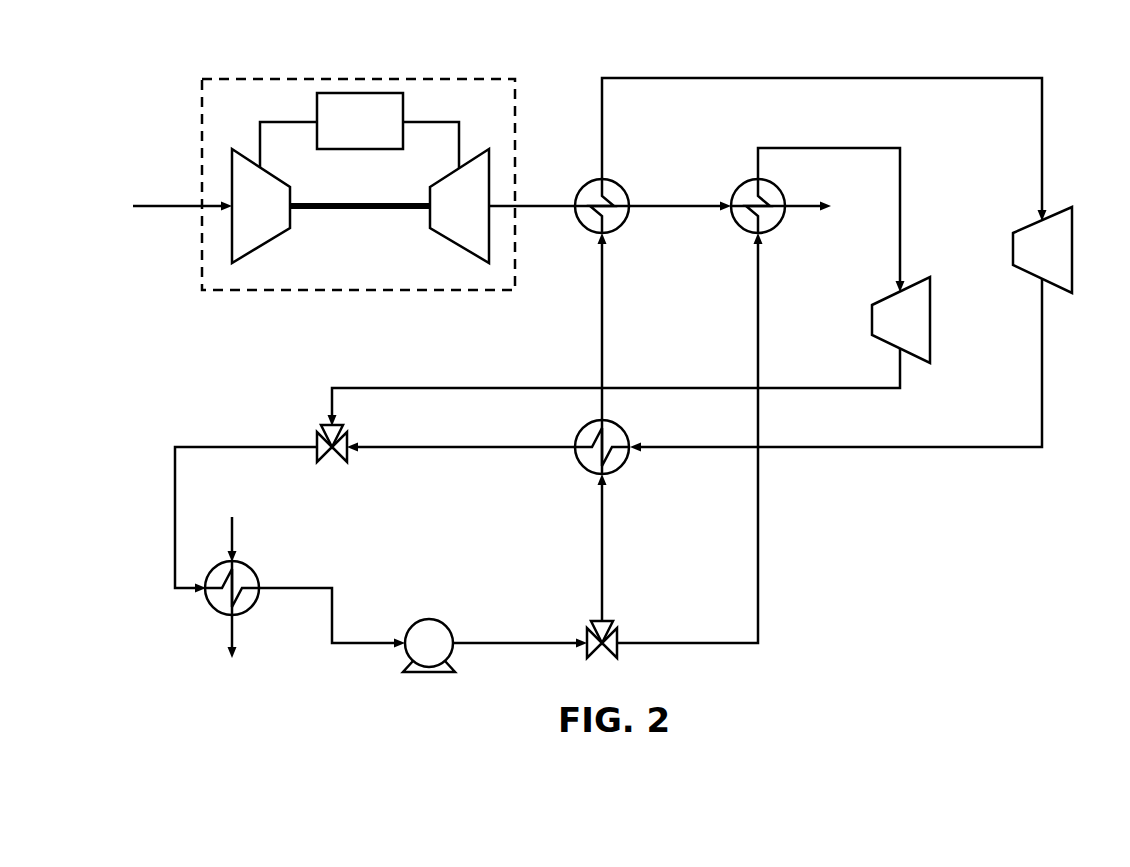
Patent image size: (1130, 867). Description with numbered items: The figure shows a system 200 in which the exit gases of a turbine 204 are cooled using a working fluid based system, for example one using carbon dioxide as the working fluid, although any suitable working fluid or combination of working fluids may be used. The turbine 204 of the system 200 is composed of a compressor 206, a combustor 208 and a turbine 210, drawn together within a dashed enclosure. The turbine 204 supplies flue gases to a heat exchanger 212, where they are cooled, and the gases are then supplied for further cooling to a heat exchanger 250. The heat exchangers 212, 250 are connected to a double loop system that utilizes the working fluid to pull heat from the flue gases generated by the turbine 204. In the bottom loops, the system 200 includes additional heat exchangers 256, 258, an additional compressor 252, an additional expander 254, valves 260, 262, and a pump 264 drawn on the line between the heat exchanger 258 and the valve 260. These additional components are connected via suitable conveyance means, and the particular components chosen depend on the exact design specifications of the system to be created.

The system 200 is at (172, 88).
The turbine 204 is at (358, 185).
The compressor 206 is at (261, 206).
The combustor 208 is at (359, 130).
The turbine 210 is at (502, 206).
The heat exchanger 212 is at (611, 197).
The heat exchanger 250 is at (775, 197).
The additional compressor 252 is at (1042, 250).
The additional expander 254 is at (901, 320).
The additional heat exchanger 256 is at (611, 437).
The additional heat exchanger 258 is at (241, 576).
The valve 260 is at (619, 629).
The valve 262 is at (315, 431).
The pump 264 is at (438, 635).